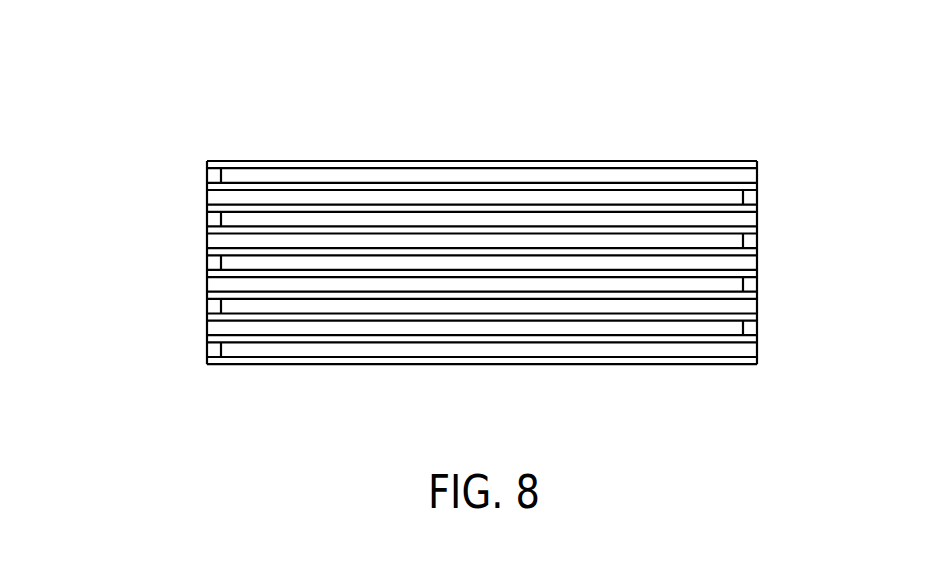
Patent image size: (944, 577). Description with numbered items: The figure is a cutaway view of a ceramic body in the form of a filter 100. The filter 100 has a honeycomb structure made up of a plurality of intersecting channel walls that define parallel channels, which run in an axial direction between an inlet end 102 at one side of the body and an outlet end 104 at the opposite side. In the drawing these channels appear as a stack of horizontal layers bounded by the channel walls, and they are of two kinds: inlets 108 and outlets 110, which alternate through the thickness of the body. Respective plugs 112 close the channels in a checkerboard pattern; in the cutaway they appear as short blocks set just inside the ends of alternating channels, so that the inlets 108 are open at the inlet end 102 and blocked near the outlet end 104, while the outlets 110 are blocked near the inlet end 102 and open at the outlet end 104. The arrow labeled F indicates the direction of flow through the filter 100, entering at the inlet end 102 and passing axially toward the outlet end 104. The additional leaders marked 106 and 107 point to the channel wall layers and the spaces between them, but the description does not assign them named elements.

The filter 100 is at (744, 108).
The inlet end 102 is at (207, 188).
The outlet end 104 is at (758, 352).
The first layers 106 is at (404, 167).
The second layers 107 is at (534, 173).
The inlets 108 is at (353, 327).
The outlets 110 is at (277, 352).
The plugs 112 is at (210, 263).
The force direction F is at (176, 263).